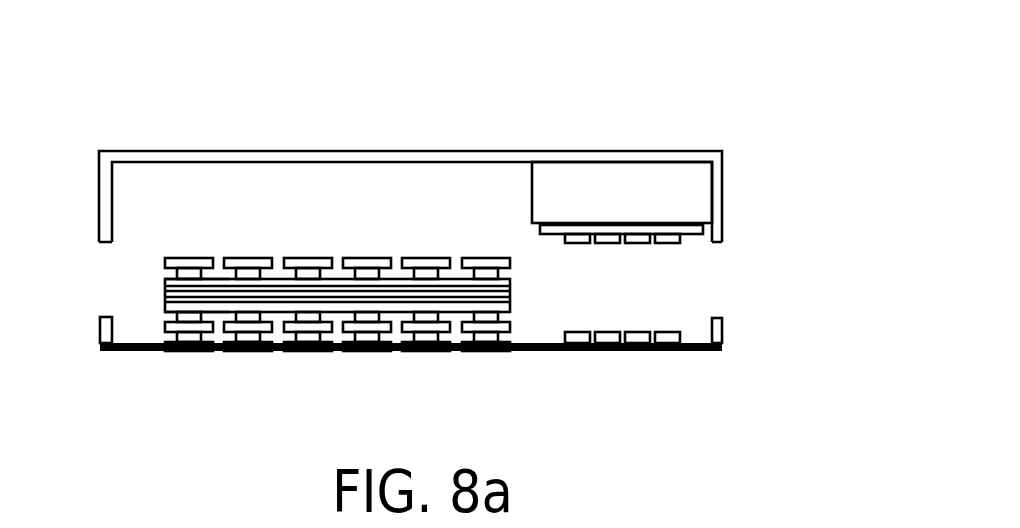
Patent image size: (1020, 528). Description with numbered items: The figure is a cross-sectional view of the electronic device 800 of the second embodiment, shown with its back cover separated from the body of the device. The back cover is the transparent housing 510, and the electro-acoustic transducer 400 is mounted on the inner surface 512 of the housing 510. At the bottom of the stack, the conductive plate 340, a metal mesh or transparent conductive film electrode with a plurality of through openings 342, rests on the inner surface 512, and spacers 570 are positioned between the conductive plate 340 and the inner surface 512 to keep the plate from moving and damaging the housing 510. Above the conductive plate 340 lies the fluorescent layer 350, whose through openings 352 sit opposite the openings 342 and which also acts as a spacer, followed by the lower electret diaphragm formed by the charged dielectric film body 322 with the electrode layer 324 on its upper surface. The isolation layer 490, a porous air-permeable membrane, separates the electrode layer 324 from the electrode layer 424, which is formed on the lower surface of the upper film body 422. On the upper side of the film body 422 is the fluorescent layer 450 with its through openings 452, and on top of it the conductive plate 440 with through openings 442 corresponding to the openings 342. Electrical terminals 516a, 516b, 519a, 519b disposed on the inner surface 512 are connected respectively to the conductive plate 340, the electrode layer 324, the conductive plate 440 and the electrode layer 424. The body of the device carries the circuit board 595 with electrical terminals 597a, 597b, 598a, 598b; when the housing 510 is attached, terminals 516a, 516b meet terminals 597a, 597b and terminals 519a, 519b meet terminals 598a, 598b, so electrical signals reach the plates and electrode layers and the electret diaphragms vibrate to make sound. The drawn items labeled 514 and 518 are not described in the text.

The electronic device 800 is at (137, 123).
The electro-acoustic transducer 400 is at (362, 245).
The film body 422 is at (513, 280).
The isolation layer 490 is at (510, 292).
The film body 322 is at (513, 308).
The electrode layer 424 is at (165, 276).
The electrode layer 324 is at (163, 300).
The fluorescent layer 450 is at (163, 267).
The conductive plate 440 is at (168, 271).
The through openings 442 is at (217, 262).
The through openings 452 is at (456, 262).
The conductive plate 340 is at (165, 325).
The through openings 342 is at (212, 337).
The contact pad 514 is at (218, 330).
The spacers 570 is at (248, 337).
The contact pad 518 is at (370, 352).
The through openings 352 is at (453, 318).
The fluorescent layer 350 is at (500, 318).
The housing 510 is at (100, 323).
The inner surface 512 is at (695, 340).
The electrical terminal 516a is at (580, 343).
The electrical terminal 516b is at (607, 343).
The electrical terminal 519a is at (637, 343).
The electrical terminal 519b is at (668, 343).
The circuit board 595 is at (689, 233).
The electrical terminal 597a is at (580, 240).
The electrical terminal 597b is at (612, 240).
The electrical terminal 598a is at (641, 240).
The electrical terminal 598b is at (663, 238).